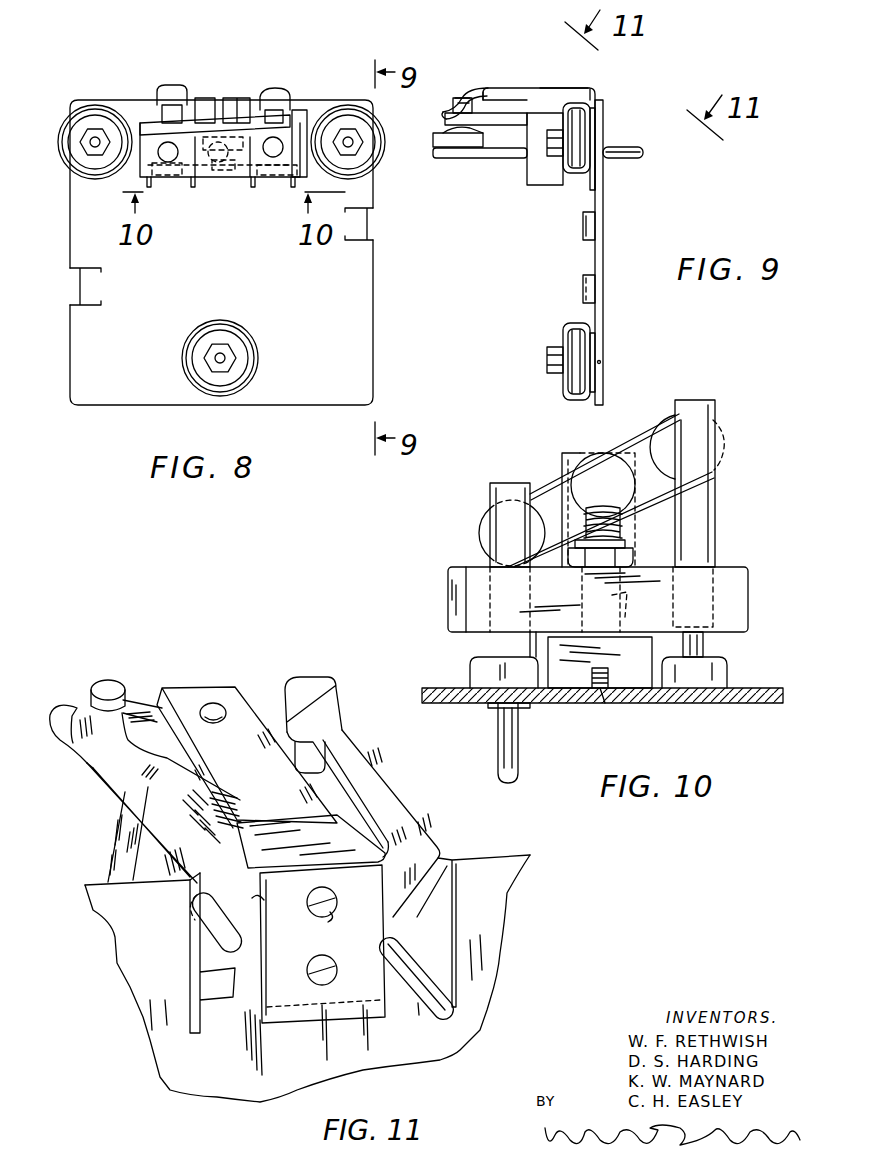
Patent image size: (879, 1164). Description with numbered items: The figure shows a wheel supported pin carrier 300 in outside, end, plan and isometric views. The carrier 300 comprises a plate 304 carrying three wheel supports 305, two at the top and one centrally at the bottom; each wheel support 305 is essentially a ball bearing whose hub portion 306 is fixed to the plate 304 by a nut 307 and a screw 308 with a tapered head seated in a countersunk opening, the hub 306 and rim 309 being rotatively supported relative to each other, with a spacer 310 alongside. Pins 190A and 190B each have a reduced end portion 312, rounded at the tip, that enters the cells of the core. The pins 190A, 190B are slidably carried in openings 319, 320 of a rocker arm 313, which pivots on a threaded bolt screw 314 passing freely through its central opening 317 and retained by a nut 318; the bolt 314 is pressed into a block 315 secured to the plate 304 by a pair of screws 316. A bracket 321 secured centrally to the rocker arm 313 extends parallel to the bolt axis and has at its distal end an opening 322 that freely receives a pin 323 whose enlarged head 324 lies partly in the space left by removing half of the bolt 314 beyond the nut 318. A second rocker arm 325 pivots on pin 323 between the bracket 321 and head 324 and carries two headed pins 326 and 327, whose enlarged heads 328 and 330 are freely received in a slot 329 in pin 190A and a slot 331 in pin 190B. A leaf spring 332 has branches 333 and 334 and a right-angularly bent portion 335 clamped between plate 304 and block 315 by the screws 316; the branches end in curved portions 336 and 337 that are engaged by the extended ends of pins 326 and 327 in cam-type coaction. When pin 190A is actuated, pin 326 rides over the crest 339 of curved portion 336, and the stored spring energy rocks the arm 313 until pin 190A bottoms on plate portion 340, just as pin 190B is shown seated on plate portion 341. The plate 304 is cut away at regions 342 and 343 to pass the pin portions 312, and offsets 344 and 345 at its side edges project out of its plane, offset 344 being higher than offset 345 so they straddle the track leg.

In FIG. 8, the carrier 300 is at (113, 50).
In FIG. 8, the plate 304 is at (373, 323).
In FIG. 9, the plate 304 is at (598, 330).
In FIG. 10, the plate 304 is at (747, 705).
In FIG. 11, the plate 304 is at (500, 962).
In FIG. 8, the wheel support 305 is at (52, 140).
In FIG. 9, the wheel support 305 is at (585, 181).
In FIG. 8, the hub portion 306 is at (240, 369).
In FIG. 9, the hub portion 306 is at (565, 378).
In FIG. 8, the nut 307 is at (211, 351).
In FIG. 9, the nut 307 is at (540, 152).
In FIG. 8, the screw 308 is at (224, 354).
In FIG. 9, the screw 308 is at (600, 366).
In FIG. 8, the rim 309 is at (120, 163).
In FIG. 9, the rim 309 is at (590, 118).
In FIG. 9, the bearing spacer 310 is at (592, 192).
In FIG. 10, the reduced end portion 312 is at (498, 733).
In FIG. 11, the reduced end portion 312 is at (222, 935).
In FIG. 8, the rocker arm 313 is at (140, 178).
In FIG. 10, the rocker arm 313 is at (750, 593).
In FIG. 11, the rocker arm 313 is at (127, 840).
In FIG. 8, the threaded bolt screw 314 is at (232, 171).
In FIG. 10, the threaded bolt screw 314 is at (623, 531).
In FIG. 10, the block 315 is at (566, 676).
In FIG. 11, the block 315 is at (340, 838).
In FIG. 10, the screws 316 is at (603, 708).
In FIG. 11, the screws 316 is at (330, 912).
In FIG. 10, the central opening 317 is at (627, 600).
In FIG. 10, the nut 318 is at (603, 566).
In FIG. 10, the opening 319 is at (720, 563).
In FIG. 10, the opening 320 is at (448, 598).
In FIG. 8, the bracket 321 is at (205, 98).
In FIG. 9, the bracket 321 is at (480, 97).
In FIG. 10, the bracket 321 is at (578, 455).
In FIG. 11, the bracket 321 is at (178, 688).
In FIG. 11, the opening 322 is at (224, 714).
In FIG. 8, the pin 323 is at (243, 97).
In FIG. 11, the pin 323 is at (218, 703).
In FIG. 8, the enlarged head 324 is at (222, 161).
In FIG. 10, the enlarged head 324 is at (624, 493).
In FIG. 8, the second rocker arm 325 is at (147, 123).
In FIG. 9, the second rocker arm 325 is at (452, 122).
In FIG. 10, the second rocker arm 325 is at (556, 478).
In FIG. 11, the second rocker arm 325 is at (136, 700).
In FIG. 8, the headed pin 326 is at (282, 110).
In FIG. 9, the headed pin 326 is at (480, 80).
In FIG. 11, the headed pin 326 is at (106, 683).
In FIG. 8, the headed pin 327 is at (165, 125).
In FIG. 11, the headed pin 327 is at (303, 765).
In FIG. 8, the enlarged head 328 is at (300, 112).
In FIG. 9, the enlarged head 328 is at (437, 146).
In FIG. 10, the enlarged head 328 is at (652, 434).
In FIG. 9, the slot 329 is at (478, 159).
In FIG. 10, the slot 329 is at (722, 424).
In FIG. 8, the enlarged head 330 is at (160, 125).
In FIG. 10, the enlarged head 330 is at (537, 543).
In FIG. 10, the slot 331 is at (490, 495).
In FIG. 9, the leaf spring 332 is at (598, 93).
In FIG. 11, the leaf spring 332 is at (417, 895).
In FIG. 9, the spring branch 333 is at (535, 88).
In FIG. 11, the spring branch 333 is at (150, 800).
In FIG. 9, the spring branch 334 is at (545, 90).
In FIG. 11, the spring branch 334 is at (393, 788).
In FIG. 11, the bent portion 335 is at (260, 968).
In FIG. 8, the curved portion 336 is at (262, 95).
In FIG. 9, the curved portion 336 is at (499, 108).
In FIG. 11, the curved portion 336 is at (100, 742).
In FIG. 8, the curved portion 337 is at (187, 88).
In FIG. 9, the curved portion 337 is at (484, 95).
In FIG. 11, the curved portion 337 is at (320, 718).
In FIG. 11, the crest 339 is at (76, 765).
In FIG. 8, the plate portion 340 is at (252, 190).
In FIG. 10, the plate portion 340 is at (726, 675).
In FIG. 11, the plate portion 340 is at (205, 980).
In FIG. 8, the plate portion 341 is at (155, 180).
In FIG. 10, the plate portion 341 is at (474, 668).
In FIG. 11, the plate portion 341 is at (337, 973).
In FIG. 11, the cut away region 342 is at (257, 903).
In FIG. 11, the cut away region 343 is at (350, 910).
In FIG. 8, the offset 344 is at (375, 224).
In FIG. 9, the offset 344 is at (583, 229).
In FIG. 8, the offset 345 is at (70, 284).
In FIG. 9, the offset 345 is at (583, 289).
In FIG. 8, the pin 190A is at (254, 187).
In FIG. 9, the pin 190A is at (500, 160).
In FIG. 10, the pin 190A is at (710, 527).
In FIG. 11, the pin 190A is at (200, 900).
In FIG. 8, the pin 190B is at (193, 187).
In FIG. 9, the pin 190B is at (645, 156).
In FIG. 10, the pin 190B is at (490, 643).
In FIG. 11, the pin 190B is at (415, 935).